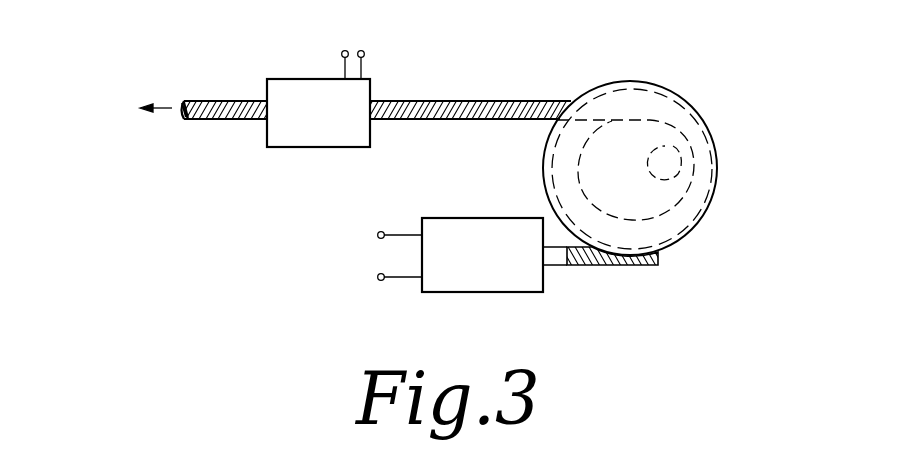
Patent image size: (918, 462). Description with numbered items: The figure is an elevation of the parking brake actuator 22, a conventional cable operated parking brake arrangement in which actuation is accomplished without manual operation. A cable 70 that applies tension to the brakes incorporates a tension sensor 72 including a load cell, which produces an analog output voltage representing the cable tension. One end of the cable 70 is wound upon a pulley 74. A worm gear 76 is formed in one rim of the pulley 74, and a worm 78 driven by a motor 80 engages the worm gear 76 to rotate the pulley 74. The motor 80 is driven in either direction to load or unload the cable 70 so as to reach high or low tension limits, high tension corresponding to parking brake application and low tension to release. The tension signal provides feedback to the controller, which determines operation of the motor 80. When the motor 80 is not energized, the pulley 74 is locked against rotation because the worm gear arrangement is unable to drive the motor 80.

The parking brake actuator 22 is at (380, 180).
The cable 70 is at (479, 100).
The tension sensor 72 is at (290, 90).
The pulley 74 is at (697, 183).
The worm gear 76 is at (693, 228).
The worm 78 is at (627, 268).
The motor 80 is at (487, 270).